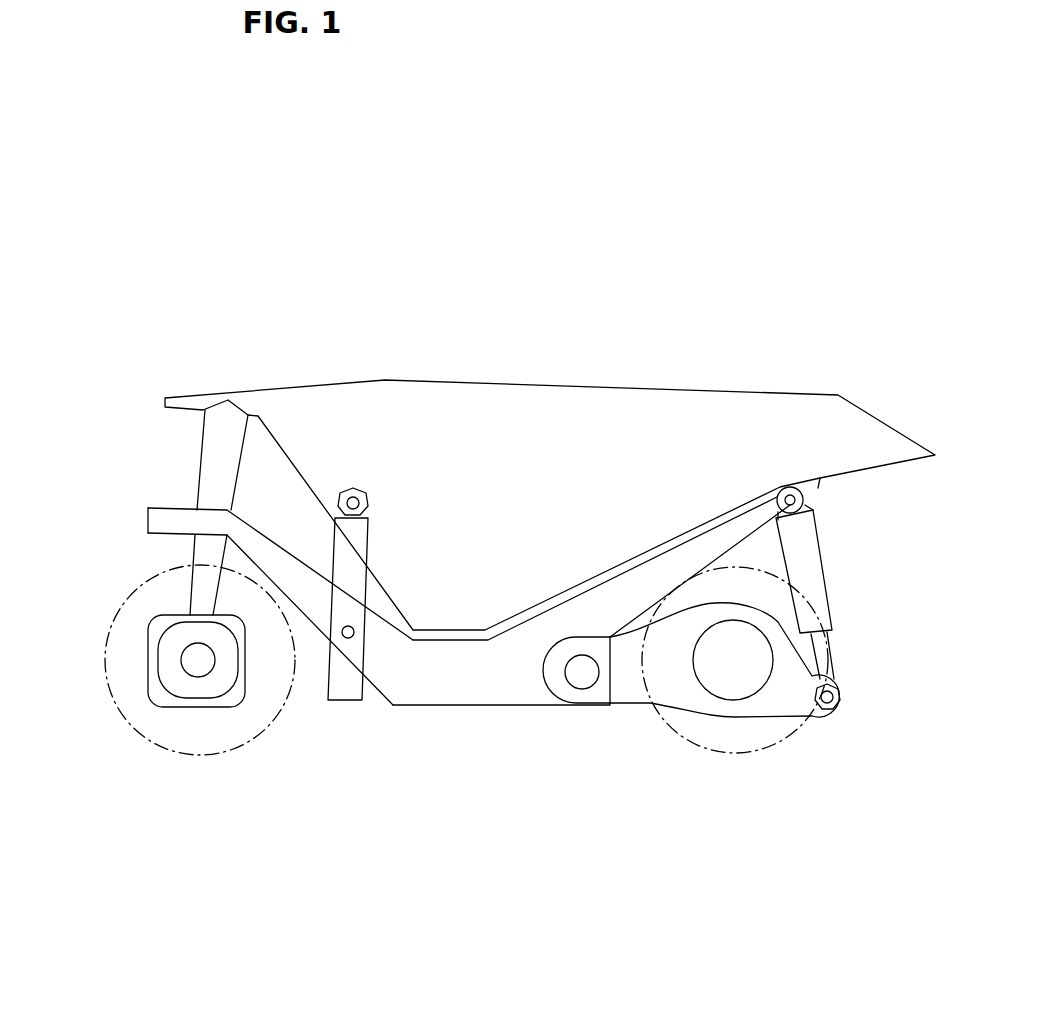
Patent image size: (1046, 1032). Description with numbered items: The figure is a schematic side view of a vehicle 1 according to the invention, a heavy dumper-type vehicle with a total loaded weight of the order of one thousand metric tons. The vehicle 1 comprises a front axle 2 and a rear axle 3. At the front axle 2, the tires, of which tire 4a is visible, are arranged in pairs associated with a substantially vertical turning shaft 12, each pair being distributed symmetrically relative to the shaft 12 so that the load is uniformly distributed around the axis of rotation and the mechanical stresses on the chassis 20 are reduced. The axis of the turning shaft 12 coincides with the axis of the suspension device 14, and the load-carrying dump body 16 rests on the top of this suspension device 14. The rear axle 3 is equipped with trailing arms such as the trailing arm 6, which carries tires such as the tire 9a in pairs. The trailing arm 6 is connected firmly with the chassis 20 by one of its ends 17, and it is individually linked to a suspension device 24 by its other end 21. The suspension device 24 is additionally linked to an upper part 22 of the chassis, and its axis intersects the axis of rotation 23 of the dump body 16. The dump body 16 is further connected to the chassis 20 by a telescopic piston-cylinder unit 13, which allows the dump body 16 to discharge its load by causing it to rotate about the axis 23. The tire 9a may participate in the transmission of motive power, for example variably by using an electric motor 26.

The vehicle 1 is at (504, 354).
The front axle 2 is at (100, 518).
The rear axle 3 is at (838, 773).
The tire 4a is at (163, 735).
The trailing arm 6 is at (622, 690).
The tire 9a is at (730, 740).
The turning shaft 12 is at (197, 590).
The telescopic piston-cylinder unit 13 is at (343, 688).
The suspension device 14 is at (195, 492).
The dump body 16 is at (345, 428).
The end of trailing arm 17 is at (560, 687).
The chassis 20 is at (448, 692).
The end of trailing arm 21 is at (847, 697).
The upper part of the chassis 22 is at (817, 480).
The axis of rotation 23 is at (780, 497).
The suspension device 24 is at (807, 572).
The electric motor 26 is at (205, 667).